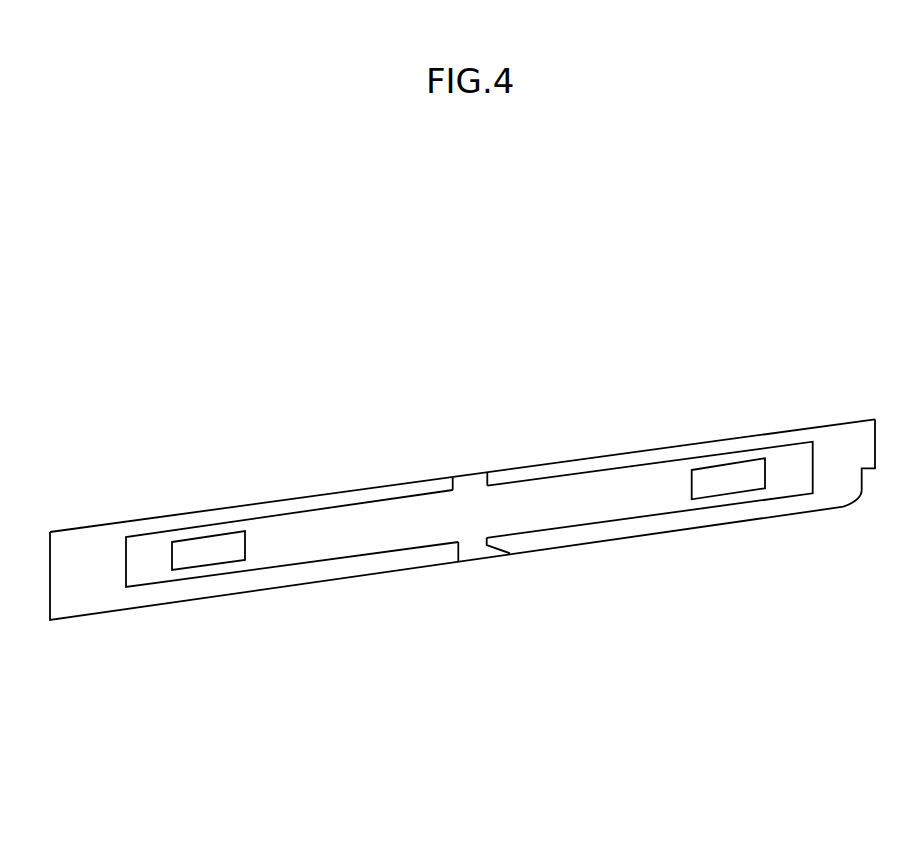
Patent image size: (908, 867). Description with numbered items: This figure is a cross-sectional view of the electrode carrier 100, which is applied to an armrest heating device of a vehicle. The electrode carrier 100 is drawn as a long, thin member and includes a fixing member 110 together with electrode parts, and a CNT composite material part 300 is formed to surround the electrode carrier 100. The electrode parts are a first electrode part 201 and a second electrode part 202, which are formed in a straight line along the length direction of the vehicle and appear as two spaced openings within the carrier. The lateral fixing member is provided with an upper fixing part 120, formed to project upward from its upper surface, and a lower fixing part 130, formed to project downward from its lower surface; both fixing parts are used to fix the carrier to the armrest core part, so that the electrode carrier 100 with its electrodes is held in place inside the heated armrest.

The electrode carrier 100 is at (124, 534).
The fixing member 110 is at (320, 542).
The upper fixing part 120 is at (472, 477).
The lower fixing part 130 is at (473, 544).
The first electrode part 201 is at (210, 537).
The second electrode part 202 is at (748, 465).
The CNT composite material part 300 is at (642, 450).